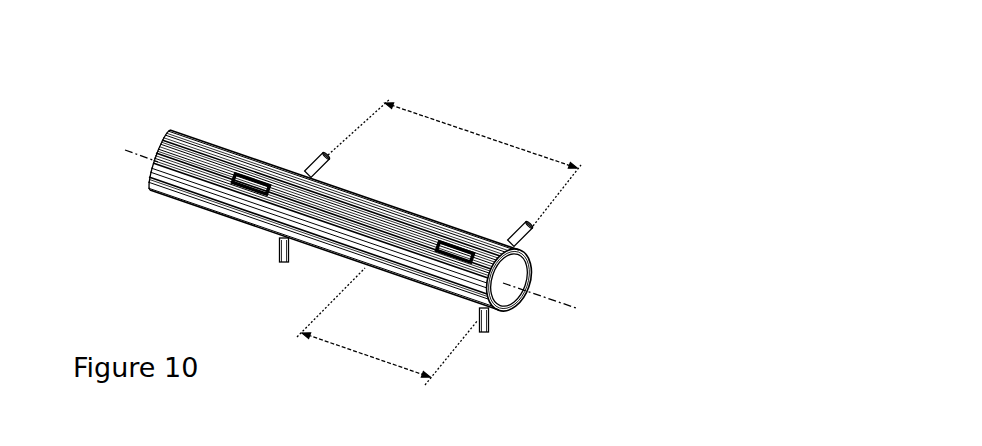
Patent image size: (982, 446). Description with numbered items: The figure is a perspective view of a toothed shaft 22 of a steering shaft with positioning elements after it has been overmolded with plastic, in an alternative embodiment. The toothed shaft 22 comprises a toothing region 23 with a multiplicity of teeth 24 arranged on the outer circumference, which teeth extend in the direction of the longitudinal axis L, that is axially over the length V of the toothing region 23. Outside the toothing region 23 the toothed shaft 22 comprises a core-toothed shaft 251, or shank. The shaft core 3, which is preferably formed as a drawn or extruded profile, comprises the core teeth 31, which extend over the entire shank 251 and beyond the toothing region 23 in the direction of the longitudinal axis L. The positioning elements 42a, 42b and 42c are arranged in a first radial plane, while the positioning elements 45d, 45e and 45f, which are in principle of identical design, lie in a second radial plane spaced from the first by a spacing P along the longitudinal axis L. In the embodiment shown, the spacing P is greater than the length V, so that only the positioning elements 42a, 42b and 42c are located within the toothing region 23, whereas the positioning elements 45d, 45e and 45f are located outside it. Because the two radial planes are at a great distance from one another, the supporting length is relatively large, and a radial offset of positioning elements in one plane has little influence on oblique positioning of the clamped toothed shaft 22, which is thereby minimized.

The shaft core 3 is at (312, 253).
The toothed shaft 22 is at (277, 147).
The toothing region 23 is at (410, 200).
The teeth 24 is at (498, 236).
The core teeth 31 is at (189, 130).
The core-toothed shaft 251 is at (233, 128).
The positioning element 42a is at (495, 325).
The positioning element 42b is at (537, 262).
The positioning element 42c is at (535, 228).
The positioning element 45d is at (282, 263).
The positioning element 45e is at (228, 222).
The positioning element 45f is at (322, 153).
The spacing P is at (480, 135).
The length of the toothing region V is at (360, 352).
The longitudinal axis L is at (575, 308).